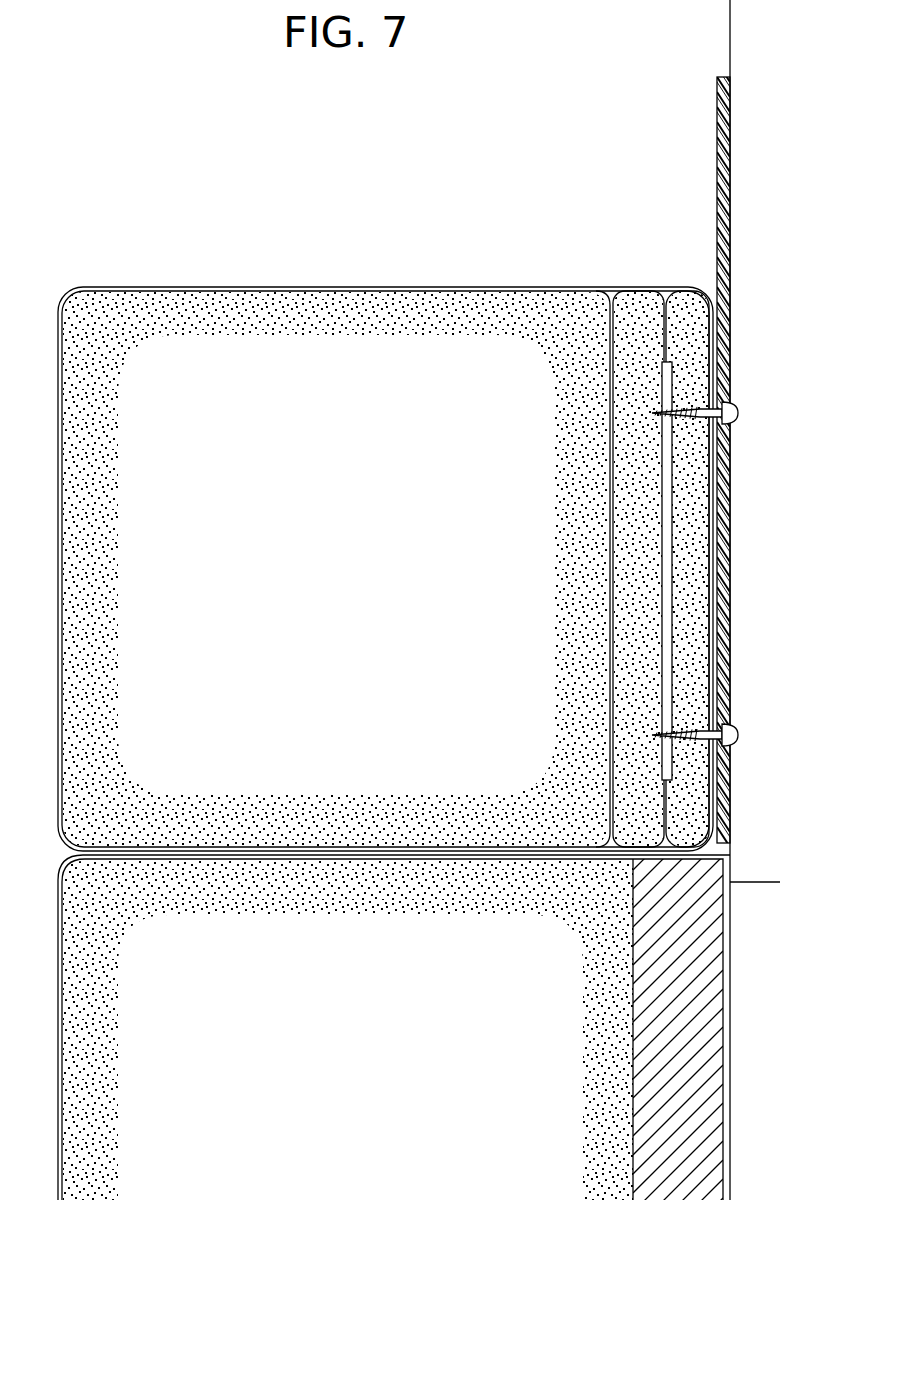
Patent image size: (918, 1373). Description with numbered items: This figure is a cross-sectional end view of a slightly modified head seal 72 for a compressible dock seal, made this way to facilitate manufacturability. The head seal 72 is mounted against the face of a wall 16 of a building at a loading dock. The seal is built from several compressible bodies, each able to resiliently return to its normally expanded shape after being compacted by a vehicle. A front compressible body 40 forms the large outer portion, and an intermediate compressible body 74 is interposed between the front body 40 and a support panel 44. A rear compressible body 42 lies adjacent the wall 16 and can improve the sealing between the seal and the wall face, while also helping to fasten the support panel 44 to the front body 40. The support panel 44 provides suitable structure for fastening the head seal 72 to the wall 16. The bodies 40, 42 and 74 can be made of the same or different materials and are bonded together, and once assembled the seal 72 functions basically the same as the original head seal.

The wall 16 is at (730, 37).
The head seal 72 is at (219, 286).
The front compressible body 40 is at (365, 322).
The intermediate compressible body 74 is at (638, 315).
The rear compressible body 42 is at (692, 320).
The support panel 44 is at (672, 383).